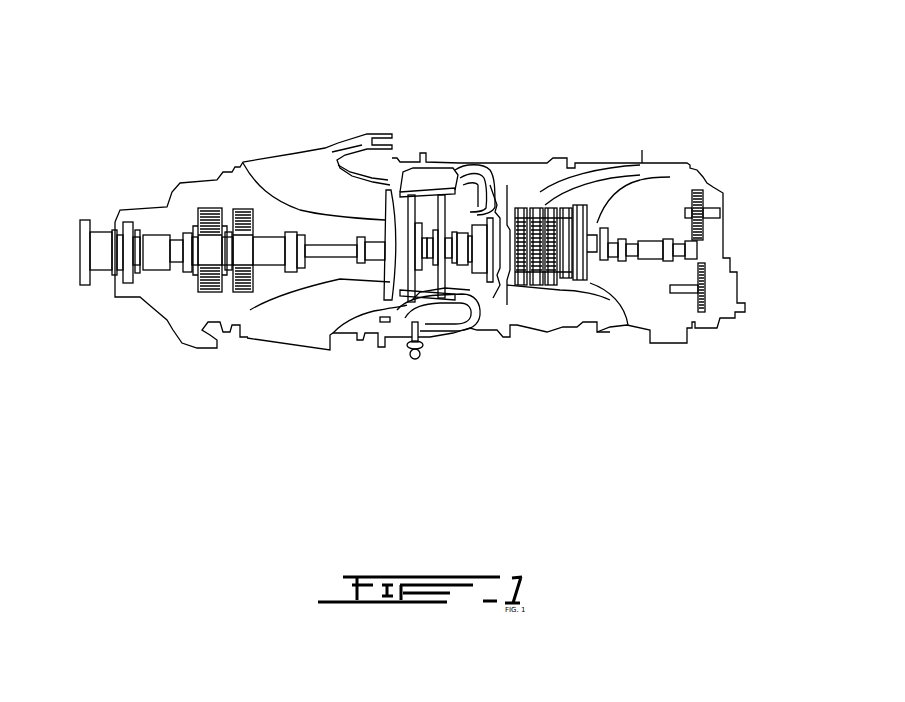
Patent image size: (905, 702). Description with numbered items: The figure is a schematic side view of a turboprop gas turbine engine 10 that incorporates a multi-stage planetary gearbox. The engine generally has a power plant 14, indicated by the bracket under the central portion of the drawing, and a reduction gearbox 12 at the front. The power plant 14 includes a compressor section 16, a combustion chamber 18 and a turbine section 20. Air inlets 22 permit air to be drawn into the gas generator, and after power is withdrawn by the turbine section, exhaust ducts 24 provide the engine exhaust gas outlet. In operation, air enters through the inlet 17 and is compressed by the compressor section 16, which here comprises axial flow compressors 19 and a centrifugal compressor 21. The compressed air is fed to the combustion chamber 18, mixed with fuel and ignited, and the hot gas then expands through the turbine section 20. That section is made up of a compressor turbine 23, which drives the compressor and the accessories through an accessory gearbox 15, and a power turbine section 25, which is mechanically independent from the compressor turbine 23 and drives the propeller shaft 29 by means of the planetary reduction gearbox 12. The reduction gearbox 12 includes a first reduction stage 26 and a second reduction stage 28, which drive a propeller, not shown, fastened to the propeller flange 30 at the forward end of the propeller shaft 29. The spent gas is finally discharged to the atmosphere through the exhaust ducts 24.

The turboprop gas turbine engine 10 is at (722, 147).
The reduction gearbox 12 is at (172, 332).
The power plant 14 is at (752, 440).
The accessory gearbox 15 is at (727, 325).
The compressor section 16 is at (530, 175).
The inlet 17 is at (632, 330).
The combustion chamber 18 is at (464, 193).
The axial flow compressors 19 is at (540, 208).
The turbine section 20 is at (424, 198).
The centrifugal compressor 21 is at (525, 185).
The air inlets 22 is at (620, 183).
The compressor turbine 23 is at (443, 195).
The exhaust ducts 24 is at (288, 330).
The power turbine section 25 is at (388, 190).
The first reduction stage 26 is at (238, 208).
The second reduction stage 28 is at (207, 208).
The propeller shaft 29 is at (112, 232).
The propeller flange 30 is at (83, 243).